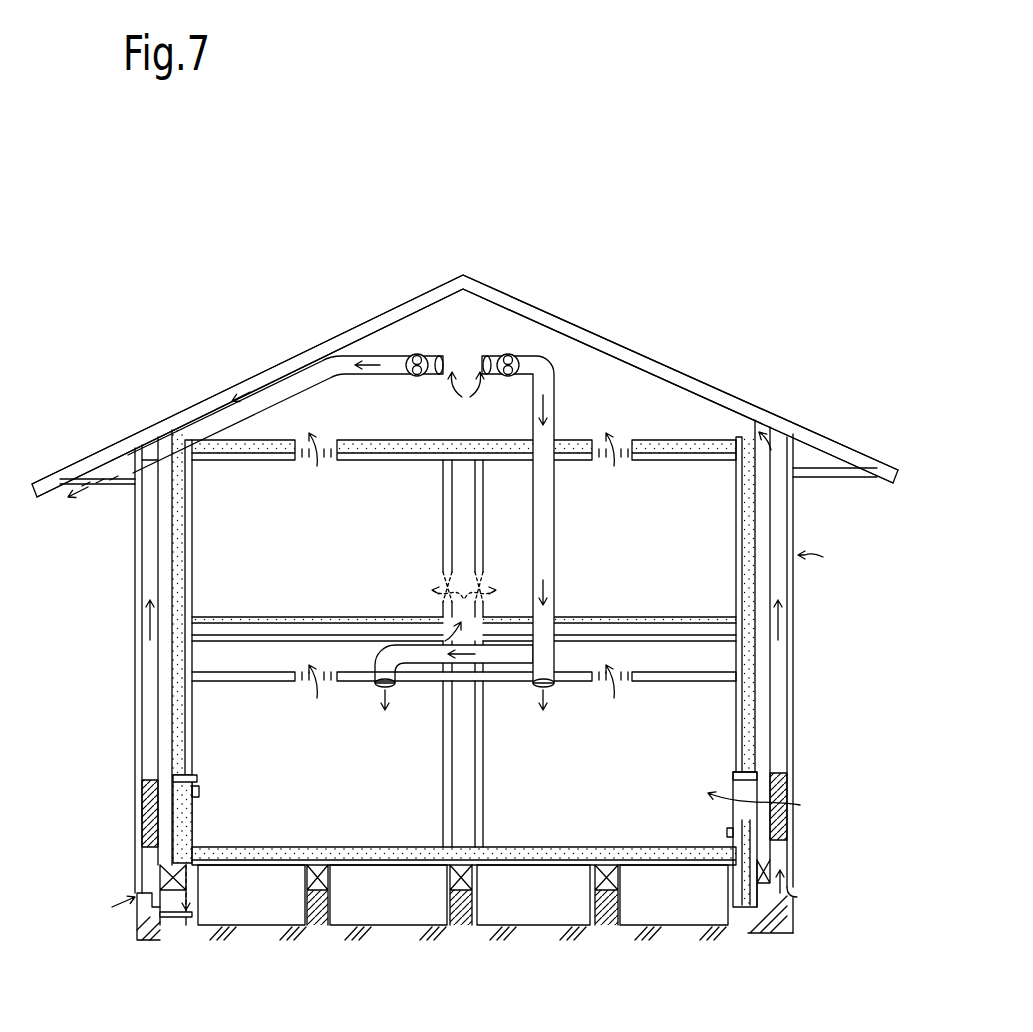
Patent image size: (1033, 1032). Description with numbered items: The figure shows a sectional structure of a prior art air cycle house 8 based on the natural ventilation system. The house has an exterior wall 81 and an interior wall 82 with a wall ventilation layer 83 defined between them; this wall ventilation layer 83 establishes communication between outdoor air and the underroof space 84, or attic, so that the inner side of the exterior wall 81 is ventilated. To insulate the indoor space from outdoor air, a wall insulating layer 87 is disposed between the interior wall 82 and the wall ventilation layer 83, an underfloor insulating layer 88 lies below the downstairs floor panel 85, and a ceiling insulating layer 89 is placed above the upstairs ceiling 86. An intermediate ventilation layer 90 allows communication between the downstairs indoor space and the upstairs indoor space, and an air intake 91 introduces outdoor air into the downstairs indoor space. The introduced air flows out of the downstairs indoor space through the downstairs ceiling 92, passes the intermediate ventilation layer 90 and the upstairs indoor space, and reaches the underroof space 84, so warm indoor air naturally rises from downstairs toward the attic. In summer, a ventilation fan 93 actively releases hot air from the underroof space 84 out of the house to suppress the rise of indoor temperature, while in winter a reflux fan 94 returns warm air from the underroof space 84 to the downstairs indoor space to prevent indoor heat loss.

The air cycle house 8 is at (272, 234).
The exterior wall 81 is at (135, 587).
The interior wall 82 is at (192, 525).
The wall ventilation layer 83 is at (152, 650).
The underroof space 84 is at (627, 388).
The downstairs floor panel 85 is at (340, 846).
The upstairs ceiling 86 is at (362, 461).
The wall insulating layer 87 is at (155, 725).
The underfloor insulating layer 88 is at (396, 925).
The ceiling insulating layer 89 is at (361, 445).
The intermediate ventilation layer 90 is at (285, 645).
The air intake 91 is at (180, 822).
The downstairs ceiling 92 is at (222, 683).
The ventilation fan 93 is at (413, 354).
The reflux fan 94 is at (510, 354).